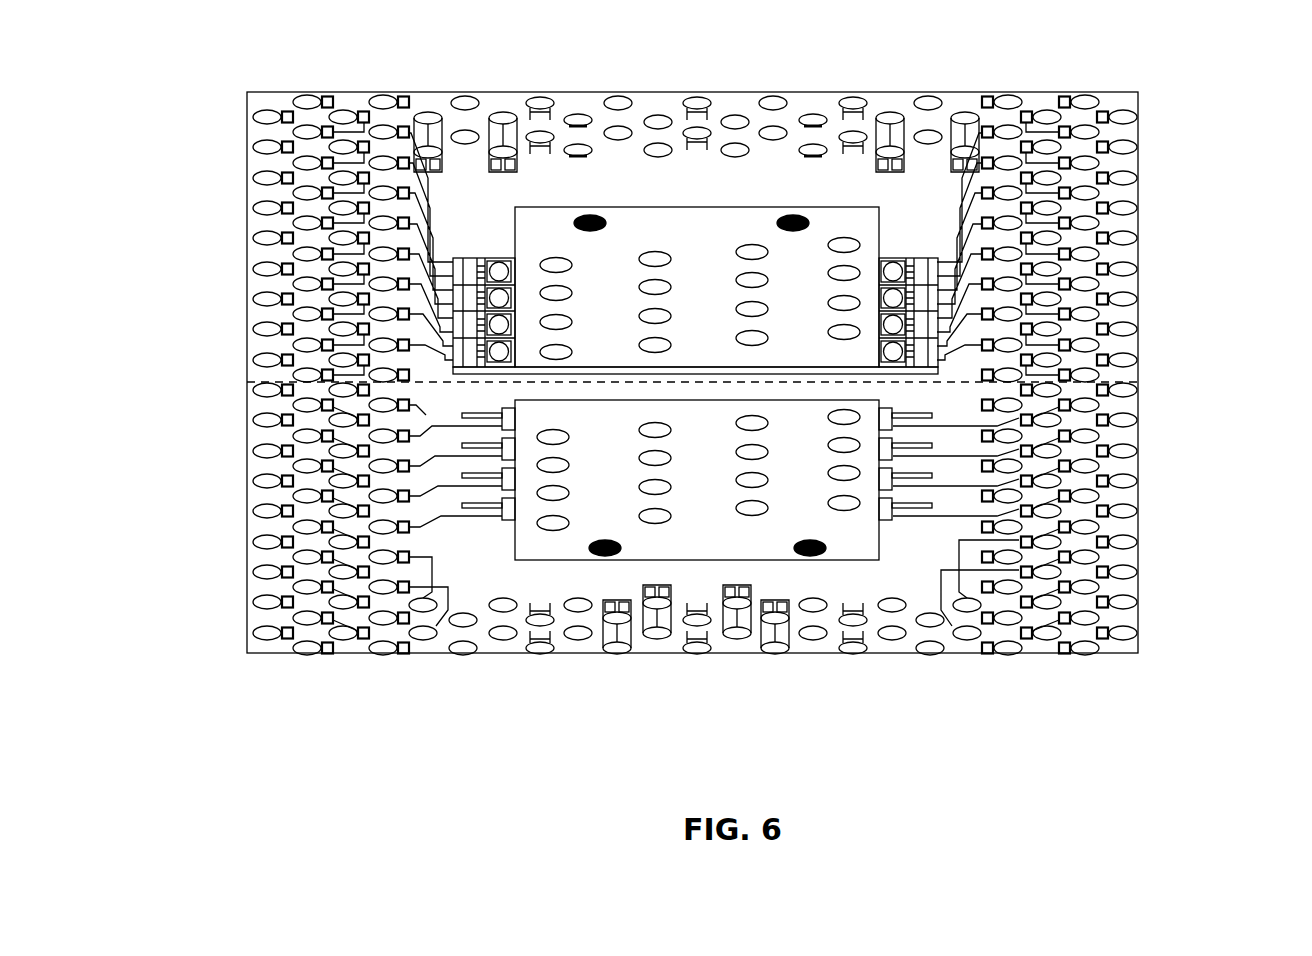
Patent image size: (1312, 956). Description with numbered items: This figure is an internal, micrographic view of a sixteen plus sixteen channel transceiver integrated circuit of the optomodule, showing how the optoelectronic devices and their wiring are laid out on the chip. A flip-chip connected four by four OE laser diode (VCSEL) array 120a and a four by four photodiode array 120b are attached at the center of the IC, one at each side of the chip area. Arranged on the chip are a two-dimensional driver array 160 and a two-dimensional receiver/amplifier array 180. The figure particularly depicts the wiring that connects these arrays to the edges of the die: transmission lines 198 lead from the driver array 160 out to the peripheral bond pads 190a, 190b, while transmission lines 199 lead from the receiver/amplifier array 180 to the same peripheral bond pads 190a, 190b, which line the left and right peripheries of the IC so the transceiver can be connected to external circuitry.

The OE laser diode array 120a is at (468, 322).
The photodiode array 120b is at (950, 366).
The 2-D driver array 160 is at (906, 250).
The 2-D receiver/amplifier array 180 is at (905, 530).
The peripheral bond pads 190a is at (227, 92).
The peripheral bond pads 190b is at (1161, 645).
The transmission lines 198 is at (442, 208).
The transmission lines 199 is at (455, 568).